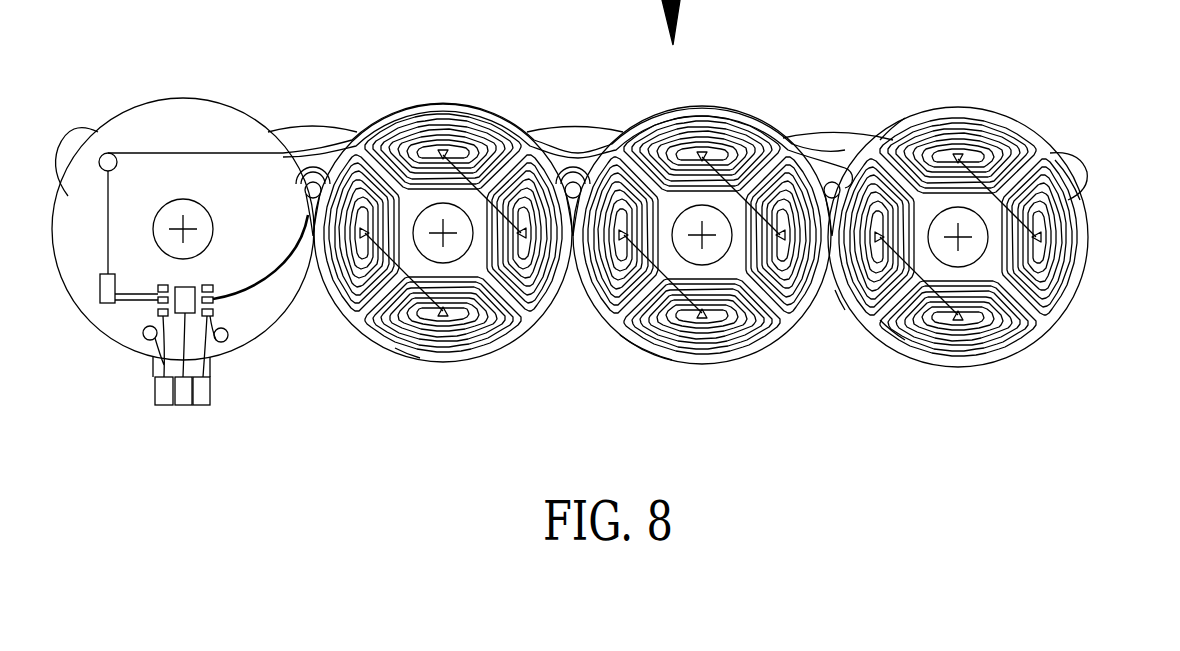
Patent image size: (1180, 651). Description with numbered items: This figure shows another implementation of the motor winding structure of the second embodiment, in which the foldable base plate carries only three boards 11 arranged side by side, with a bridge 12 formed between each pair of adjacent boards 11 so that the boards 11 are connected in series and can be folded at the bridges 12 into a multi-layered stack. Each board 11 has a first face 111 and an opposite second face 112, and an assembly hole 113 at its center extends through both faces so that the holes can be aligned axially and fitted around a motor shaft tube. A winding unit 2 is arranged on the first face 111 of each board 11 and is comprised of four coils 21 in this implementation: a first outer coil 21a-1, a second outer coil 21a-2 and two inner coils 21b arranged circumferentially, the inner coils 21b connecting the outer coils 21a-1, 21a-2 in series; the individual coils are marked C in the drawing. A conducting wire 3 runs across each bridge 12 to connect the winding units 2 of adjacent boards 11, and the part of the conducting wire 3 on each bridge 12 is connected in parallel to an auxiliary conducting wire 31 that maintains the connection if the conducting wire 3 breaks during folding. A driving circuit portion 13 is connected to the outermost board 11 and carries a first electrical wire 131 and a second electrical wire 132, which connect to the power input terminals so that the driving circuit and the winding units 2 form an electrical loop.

The winding unit 2 is at (965, 100).
The conducting wire 3 is at (290, 150).
The board 11 is at (408, 104).
The bridge 12 is at (318, 106).
The driving circuit portion 13 is at (195, 112).
The coil 21 is at (402, 340).
The first outer coil 21a-1 is at (905, 110).
The second outer coil 21a-2 is at (838, 300).
The inner coil 21b is at (1070, 222).
The auxiliary conducting wire 31 is at (300, 150).
The first face 111 is at (640, 350).
The second face 112 is at (657, 345).
The assembly hole 113 is at (450, 205).
The first electrical wire 131 is at (272, 287).
The second electrical wire 132 is at (153, 152).
The coil C is at (363, 247).